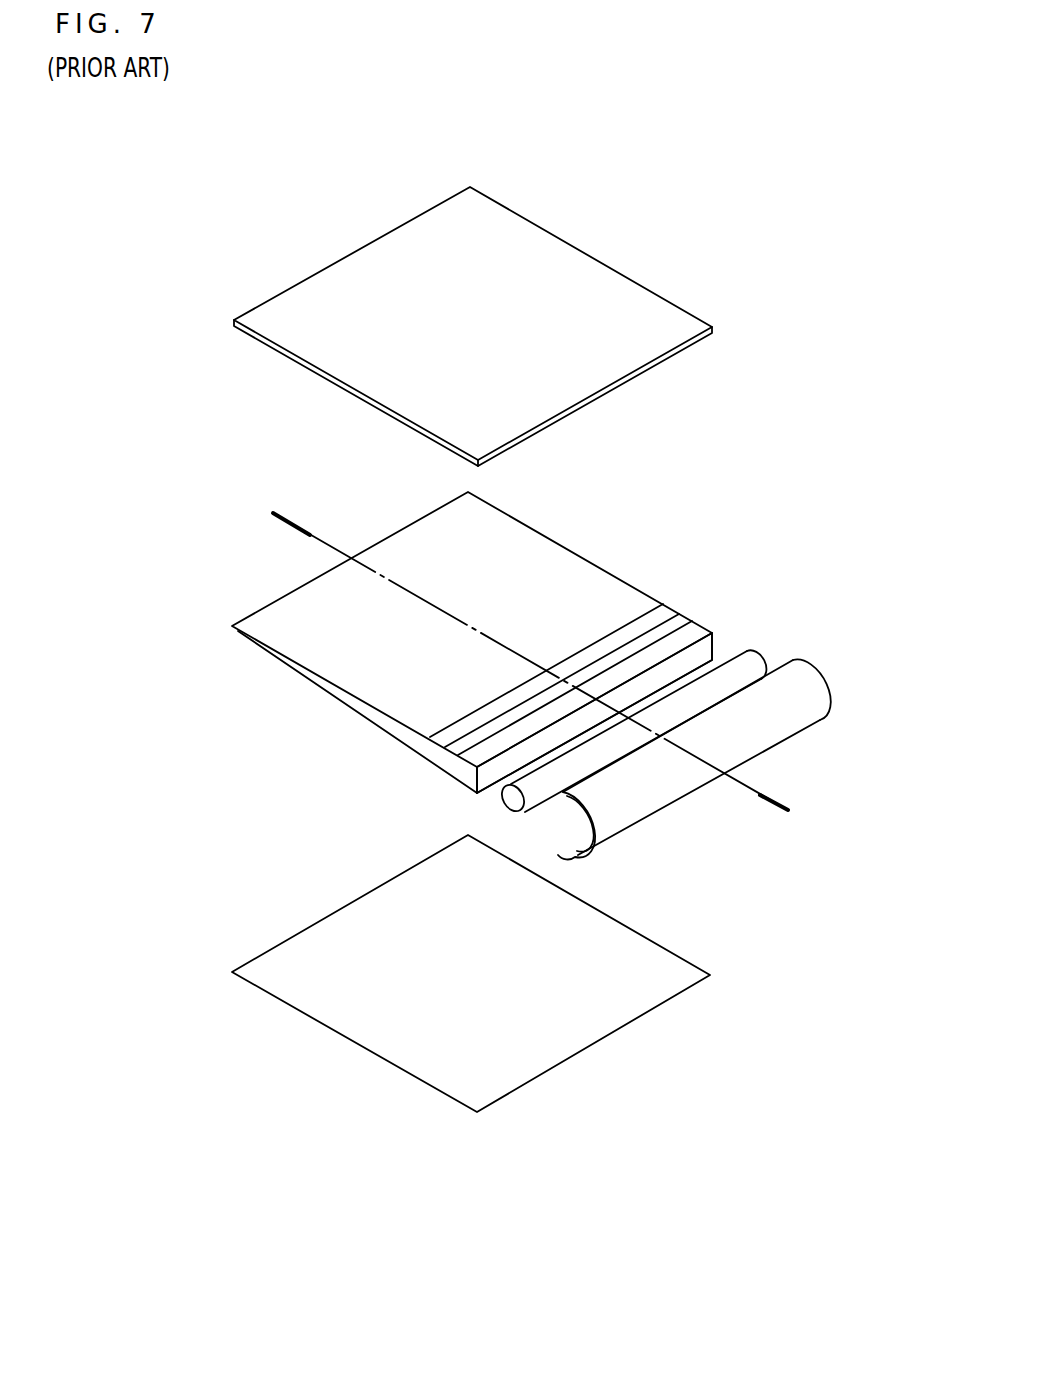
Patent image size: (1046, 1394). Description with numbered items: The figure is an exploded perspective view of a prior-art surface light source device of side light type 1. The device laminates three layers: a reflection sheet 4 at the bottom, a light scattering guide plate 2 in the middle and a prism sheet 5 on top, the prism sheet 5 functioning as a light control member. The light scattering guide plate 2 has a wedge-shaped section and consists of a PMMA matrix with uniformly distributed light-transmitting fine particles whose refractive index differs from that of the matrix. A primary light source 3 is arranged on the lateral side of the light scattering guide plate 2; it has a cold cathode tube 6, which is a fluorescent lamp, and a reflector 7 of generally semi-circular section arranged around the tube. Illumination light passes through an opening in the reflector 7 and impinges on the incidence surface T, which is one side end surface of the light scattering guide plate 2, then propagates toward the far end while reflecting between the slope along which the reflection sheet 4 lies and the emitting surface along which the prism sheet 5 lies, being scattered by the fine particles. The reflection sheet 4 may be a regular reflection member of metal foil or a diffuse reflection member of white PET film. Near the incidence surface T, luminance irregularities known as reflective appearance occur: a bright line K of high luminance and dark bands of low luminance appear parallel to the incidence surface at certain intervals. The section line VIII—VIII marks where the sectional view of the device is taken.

The surface light source device of side light type 1 is at (403, 1203).
The light scattering guide plate 2 is at (271, 626).
The primary light source 3 is at (798, 633).
The reflection sheet 4 is at (517, 1078).
The prism sheet 5 is at (593, 385).
The cold cathode tube 6 is at (545, 787).
The reflector 7 is at (690, 778).
The bright line K is at (600, 637).
The incidence surface T is at (518, 755).
The line VIII— VIII is at (360, 482).